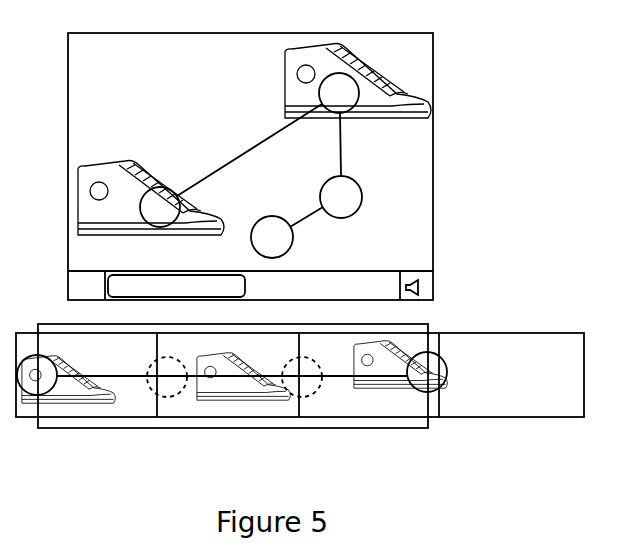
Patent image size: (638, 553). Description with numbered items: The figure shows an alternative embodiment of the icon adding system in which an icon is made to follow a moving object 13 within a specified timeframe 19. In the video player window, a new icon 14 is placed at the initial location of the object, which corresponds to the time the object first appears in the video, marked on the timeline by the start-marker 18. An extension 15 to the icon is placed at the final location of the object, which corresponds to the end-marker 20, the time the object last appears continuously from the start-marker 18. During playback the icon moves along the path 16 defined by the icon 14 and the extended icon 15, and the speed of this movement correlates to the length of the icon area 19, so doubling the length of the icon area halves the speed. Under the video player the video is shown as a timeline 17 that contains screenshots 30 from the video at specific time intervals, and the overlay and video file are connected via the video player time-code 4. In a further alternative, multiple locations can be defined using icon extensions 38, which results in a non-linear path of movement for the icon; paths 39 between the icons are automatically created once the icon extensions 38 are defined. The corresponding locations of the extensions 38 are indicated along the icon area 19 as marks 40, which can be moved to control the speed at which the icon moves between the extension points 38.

The video player time-code 4 is at (128, 288).
The moving object 13 is at (131, 167).
The new icon 14 is at (167, 205).
The extension 15 is at (342, 102).
The path 16 is at (252, 153).
The timeline 17 is at (20, 416).
The start-marker 18 is at (55, 366).
The icon area 19 is at (283, 418).
The end-marker 20 is at (448, 377).
The screenshots 30 is at (560, 350).
The icon extensions 38 is at (361, 207).
The paths 39 is at (340, 157).
The marks 40 is at (149, 366).